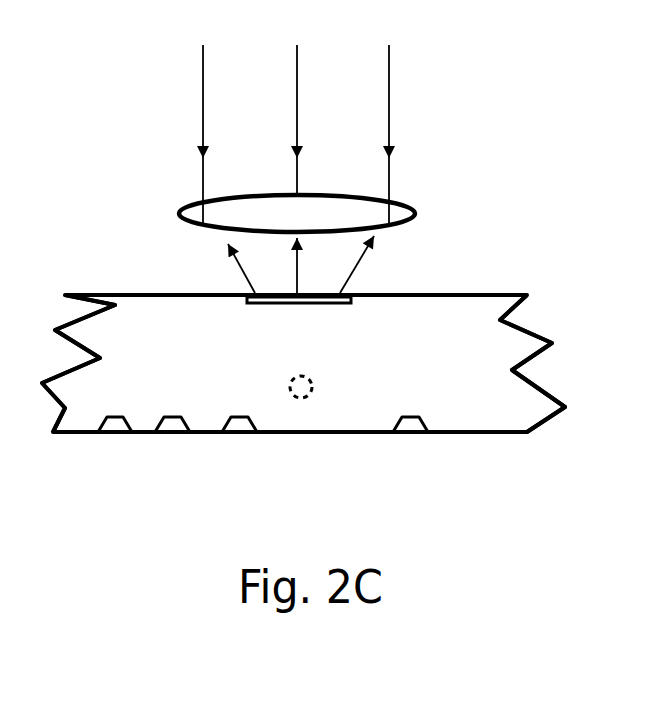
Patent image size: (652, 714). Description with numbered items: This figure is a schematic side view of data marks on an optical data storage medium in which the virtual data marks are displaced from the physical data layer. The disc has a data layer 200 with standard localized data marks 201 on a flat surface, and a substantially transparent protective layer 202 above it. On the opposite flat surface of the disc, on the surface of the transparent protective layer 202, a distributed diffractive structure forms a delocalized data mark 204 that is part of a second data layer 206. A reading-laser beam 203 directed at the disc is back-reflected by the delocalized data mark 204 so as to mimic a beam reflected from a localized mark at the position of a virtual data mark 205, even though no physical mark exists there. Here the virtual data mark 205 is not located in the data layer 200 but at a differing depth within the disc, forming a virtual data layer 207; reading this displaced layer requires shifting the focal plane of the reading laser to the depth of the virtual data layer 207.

The data layer 200 is at (560, 433).
The localized data marks 201 is at (230, 430).
The transparent protective layer 202 is at (193, 367).
The reading-laser beam 203 is at (390, 113).
The delocalized data mark 204 is at (307, 303).
The virtual data mark 205 is at (296, 395).
The second data layer 206 is at (554, 296).
The virtual data layer 207 is at (560, 380).